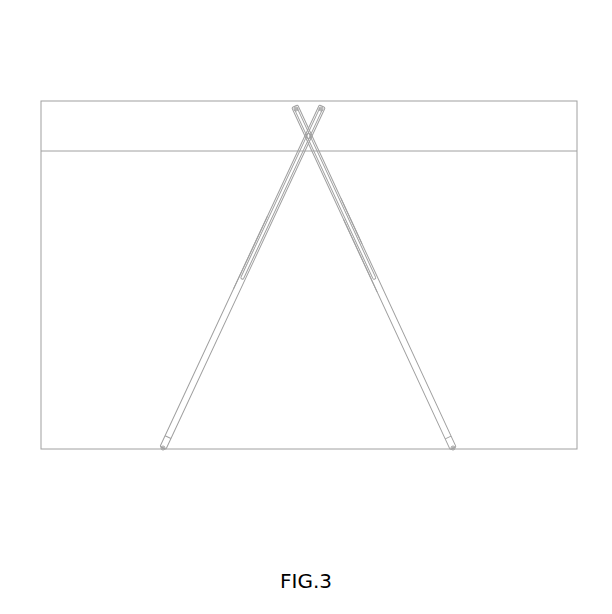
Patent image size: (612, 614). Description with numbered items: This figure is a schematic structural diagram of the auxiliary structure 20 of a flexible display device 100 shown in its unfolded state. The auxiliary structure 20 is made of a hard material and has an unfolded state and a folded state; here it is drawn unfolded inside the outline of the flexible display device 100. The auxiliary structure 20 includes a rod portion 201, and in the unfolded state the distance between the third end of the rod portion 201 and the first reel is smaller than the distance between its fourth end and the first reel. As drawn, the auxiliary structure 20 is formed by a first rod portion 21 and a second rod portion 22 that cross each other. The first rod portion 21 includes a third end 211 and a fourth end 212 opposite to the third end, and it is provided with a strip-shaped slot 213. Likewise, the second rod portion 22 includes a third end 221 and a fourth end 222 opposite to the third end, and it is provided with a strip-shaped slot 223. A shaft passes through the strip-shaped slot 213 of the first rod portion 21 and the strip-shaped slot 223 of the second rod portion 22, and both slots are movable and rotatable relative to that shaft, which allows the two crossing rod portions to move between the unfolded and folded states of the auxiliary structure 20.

The flexible display device 100 is at (147, 72).
The auxiliary structure 20 is at (336, 159).
The rod portion 201 is at (347, 229).
The first rod portion 21 is at (195, 385).
The third end 211 is at (284, 111).
The fourth end 212 is at (150, 448).
The strip-shaped slot 213 is at (245, 263).
The second rod portion 22 is at (417, 380).
The third end 221 is at (333, 111).
The fourth end 222 is at (465, 439).
The strip-shaped slot 223 is at (365, 262).